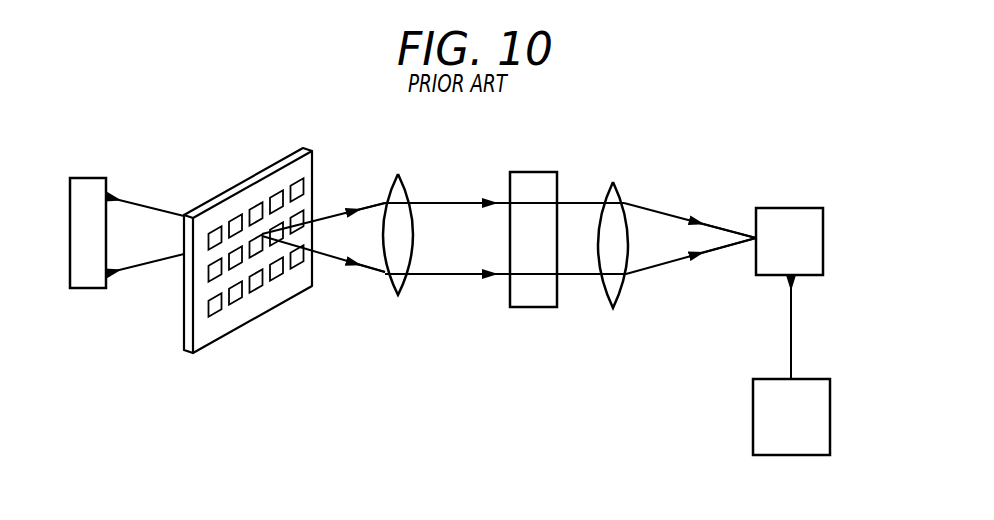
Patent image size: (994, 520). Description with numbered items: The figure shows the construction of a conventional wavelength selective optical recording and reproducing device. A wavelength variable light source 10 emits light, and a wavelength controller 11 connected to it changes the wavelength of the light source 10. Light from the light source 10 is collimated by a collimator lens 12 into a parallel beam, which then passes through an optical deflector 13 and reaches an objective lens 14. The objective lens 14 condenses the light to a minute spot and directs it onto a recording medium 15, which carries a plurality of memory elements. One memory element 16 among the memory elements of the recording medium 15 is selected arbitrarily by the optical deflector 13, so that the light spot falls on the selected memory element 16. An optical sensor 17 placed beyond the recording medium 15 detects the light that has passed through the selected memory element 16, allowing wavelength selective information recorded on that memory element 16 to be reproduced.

The wavelength variable light source 10 is at (823, 225).
The wavelength controller 11 is at (830, 395).
The collimator lens 12 is at (622, 197).
The optical deflector 13 is at (557, 190).
The objective lens 14 is at (402, 192).
The recording medium 15 is at (313, 170).
The memory element 16 is at (259, 239).
The optical sensor 17 is at (108, 188).